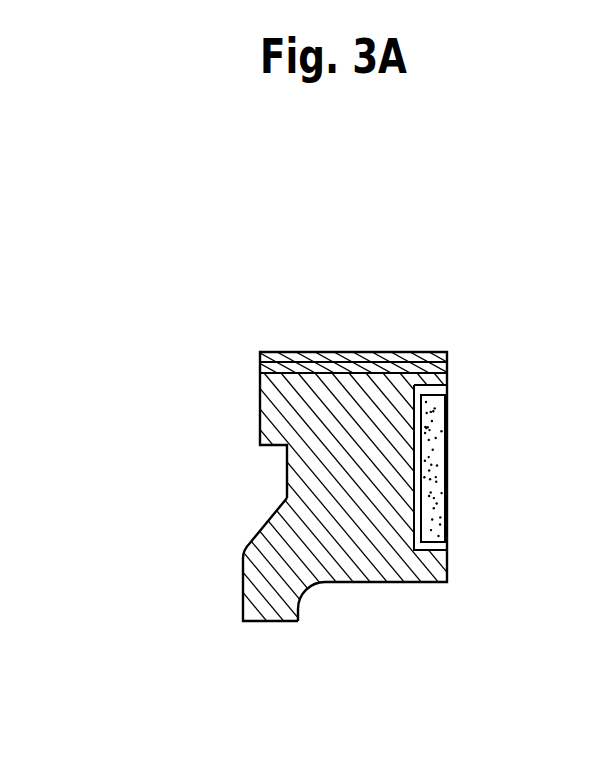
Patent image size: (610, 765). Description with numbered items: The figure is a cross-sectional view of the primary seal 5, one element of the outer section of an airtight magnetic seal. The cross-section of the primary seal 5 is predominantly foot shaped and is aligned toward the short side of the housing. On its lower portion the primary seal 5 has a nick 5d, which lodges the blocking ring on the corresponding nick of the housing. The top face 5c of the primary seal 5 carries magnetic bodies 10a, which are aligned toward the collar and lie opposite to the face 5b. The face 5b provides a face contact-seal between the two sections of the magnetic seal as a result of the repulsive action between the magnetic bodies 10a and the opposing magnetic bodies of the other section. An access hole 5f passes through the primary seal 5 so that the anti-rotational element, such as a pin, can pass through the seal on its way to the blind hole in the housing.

The primary seal 5 is at (370, 299).
The access hole 5f is at (266, 365).
The face 5b is at (258, 575).
The nick 5d is at (322, 588).
The top face 5c is at (452, 565).
The magnetic bodies 10a is at (432, 443).